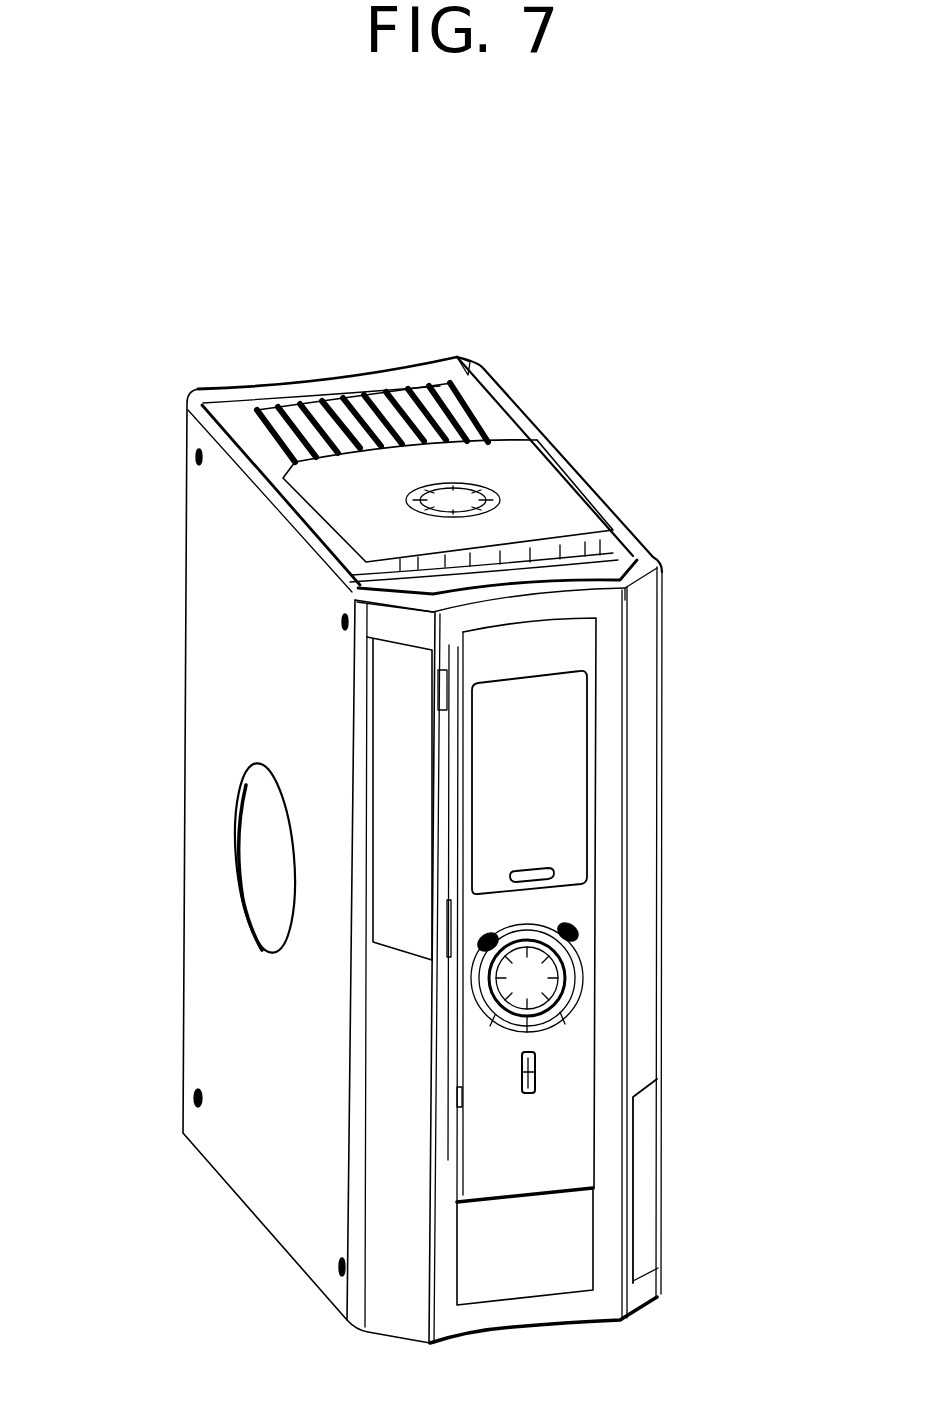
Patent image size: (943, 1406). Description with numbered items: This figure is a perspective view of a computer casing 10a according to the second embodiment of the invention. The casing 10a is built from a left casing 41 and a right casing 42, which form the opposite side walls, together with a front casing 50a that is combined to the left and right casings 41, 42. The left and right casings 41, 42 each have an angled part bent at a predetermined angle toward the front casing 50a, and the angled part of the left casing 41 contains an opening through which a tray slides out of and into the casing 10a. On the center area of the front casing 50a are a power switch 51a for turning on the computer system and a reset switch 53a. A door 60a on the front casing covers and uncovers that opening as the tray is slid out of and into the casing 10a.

The casing 10a is at (667, 403).
The left casing 41 is at (195, 680).
The right casing 42 is at (633, 526).
The front casing 50a is at (610, 628).
The power switch 51a is at (530, 975).
The reset switch 53a is at (535, 1063).
The door 60a is at (383, 797).